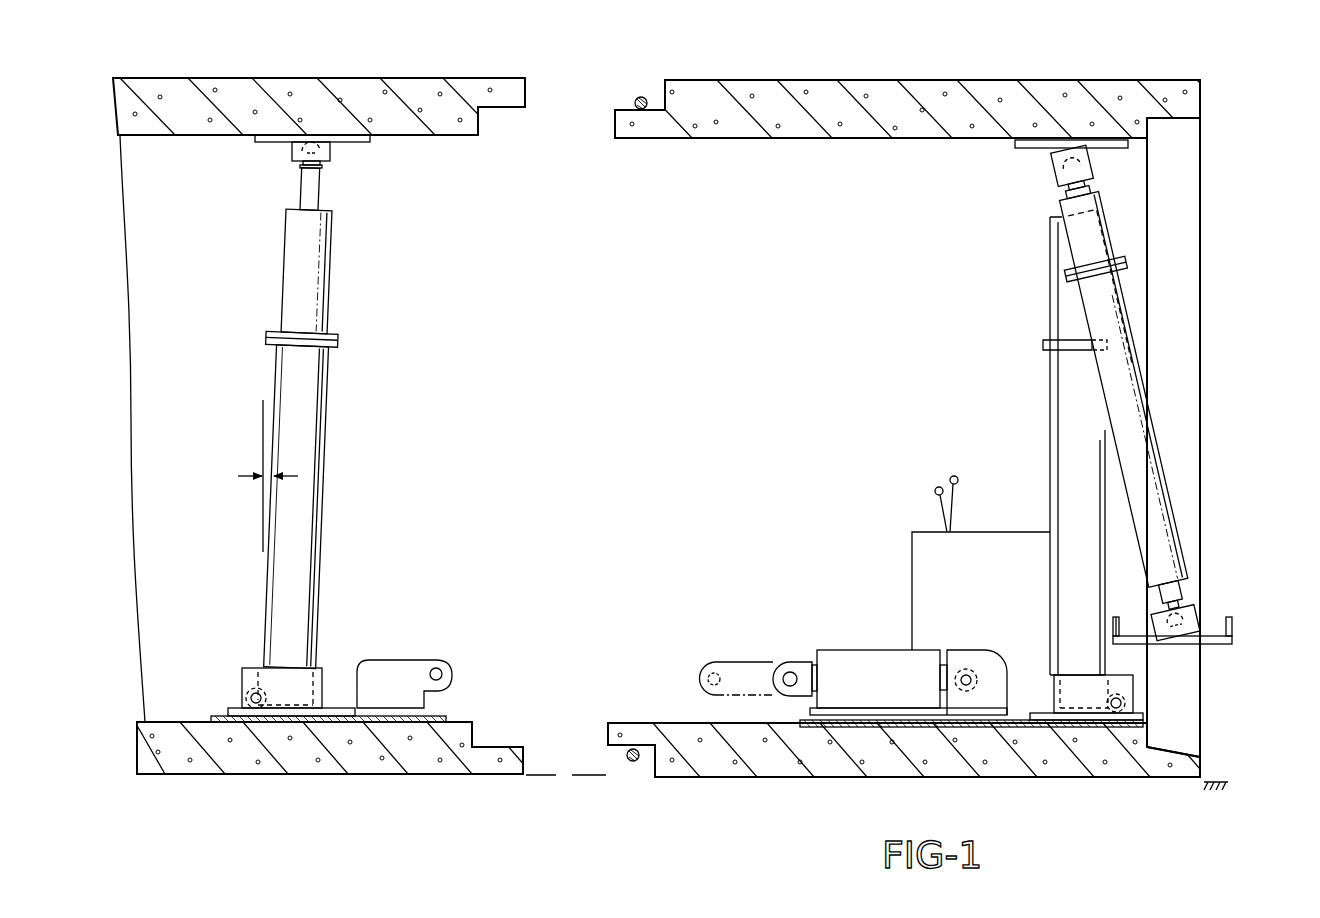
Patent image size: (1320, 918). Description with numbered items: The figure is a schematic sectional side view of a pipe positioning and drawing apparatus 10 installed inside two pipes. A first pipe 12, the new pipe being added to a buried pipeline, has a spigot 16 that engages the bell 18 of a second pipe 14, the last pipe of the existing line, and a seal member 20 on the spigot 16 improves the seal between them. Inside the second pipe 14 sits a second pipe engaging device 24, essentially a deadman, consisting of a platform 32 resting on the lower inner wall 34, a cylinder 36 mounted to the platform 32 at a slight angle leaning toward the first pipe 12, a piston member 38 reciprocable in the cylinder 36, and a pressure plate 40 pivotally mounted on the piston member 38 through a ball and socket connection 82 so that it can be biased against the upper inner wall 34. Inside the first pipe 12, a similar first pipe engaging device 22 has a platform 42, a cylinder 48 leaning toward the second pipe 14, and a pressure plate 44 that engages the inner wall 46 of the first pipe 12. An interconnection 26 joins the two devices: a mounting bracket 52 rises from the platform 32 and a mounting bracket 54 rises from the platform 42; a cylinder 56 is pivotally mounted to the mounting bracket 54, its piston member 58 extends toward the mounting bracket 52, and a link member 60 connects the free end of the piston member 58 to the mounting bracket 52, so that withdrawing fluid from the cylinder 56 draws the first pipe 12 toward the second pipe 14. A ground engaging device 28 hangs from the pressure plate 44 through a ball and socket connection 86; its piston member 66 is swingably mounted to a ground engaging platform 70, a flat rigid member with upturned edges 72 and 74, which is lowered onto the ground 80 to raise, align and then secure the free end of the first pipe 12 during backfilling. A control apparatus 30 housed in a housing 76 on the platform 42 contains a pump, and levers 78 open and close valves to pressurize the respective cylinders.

The apparatus 10 is at (1238, 183).
The first pipe 12 is at (828, 90).
The second pipe 14 is at (288, 86).
The spigot 16 is at (640, 128).
The bell 18 is at (501, 100).
The seal member 20 is at (635, 97).
The first pipe engaging device 22 is at (1047, 426).
The second pipe engaging device 24 is at (324, 448).
The interconnection 26 is at (841, 647).
The ground engaging device 28 is at (1160, 440).
The control apparatus 30 is at (908, 531).
The platform 32 is at (444, 717).
The inner wall 34 is at (182, 718).
The cylinder 36 is at (296, 507).
The piston member 38 is at (322, 195).
The pressure plate 40 is at (353, 143).
The platform 42 is at (1016, 714).
The pressure plate 44 is at (1028, 146).
The inner wall 46 is at (748, 140).
The cylinder 48 is at (1077, 584).
The mounting bracket 52 is at (404, 684).
The mounting bracket 54 is at (974, 657).
The cylinder 56 is at (908, 682).
The piston member 58 is at (790, 663).
The link member 60 is at (738, 663).
The piston member 66 is at (1184, 586).
The ground engaging platform 70 is at (1218, 648).
The upturned edge 72 is at (1236, 628).
The upturned edge 74 is at (1114, 626).
The housing 76 is at (947, 562).
The levers 78 is at (955, 502).
The ground 80 is at (1228, 778).
The ball and socket connection 82 is at (297, 153).
The ball and socket connection 86 is at (1053, 180).